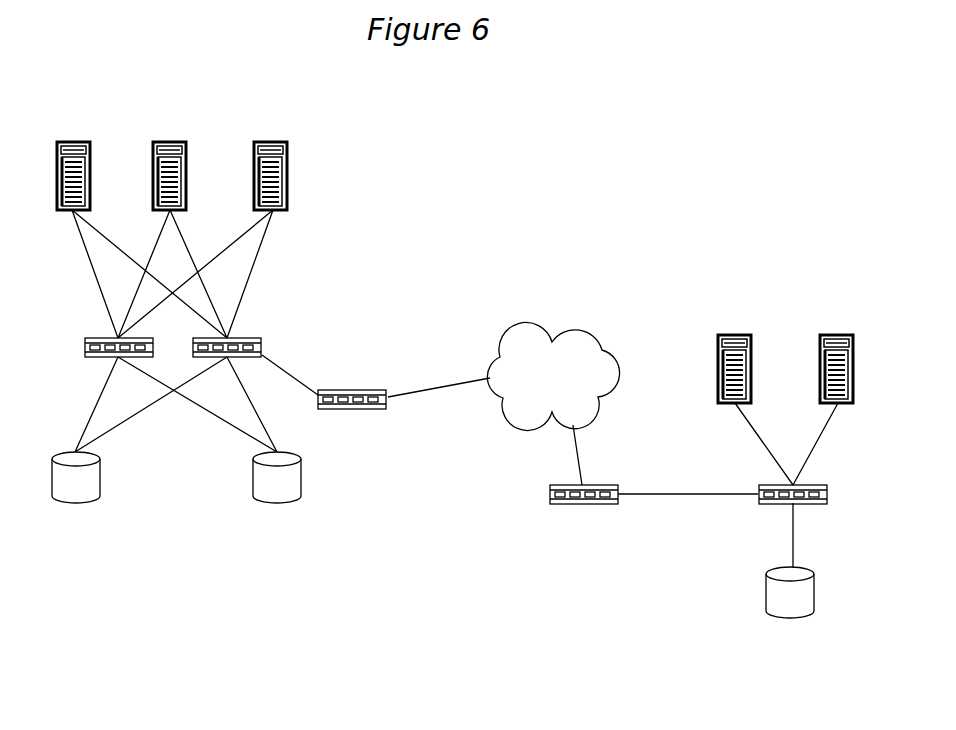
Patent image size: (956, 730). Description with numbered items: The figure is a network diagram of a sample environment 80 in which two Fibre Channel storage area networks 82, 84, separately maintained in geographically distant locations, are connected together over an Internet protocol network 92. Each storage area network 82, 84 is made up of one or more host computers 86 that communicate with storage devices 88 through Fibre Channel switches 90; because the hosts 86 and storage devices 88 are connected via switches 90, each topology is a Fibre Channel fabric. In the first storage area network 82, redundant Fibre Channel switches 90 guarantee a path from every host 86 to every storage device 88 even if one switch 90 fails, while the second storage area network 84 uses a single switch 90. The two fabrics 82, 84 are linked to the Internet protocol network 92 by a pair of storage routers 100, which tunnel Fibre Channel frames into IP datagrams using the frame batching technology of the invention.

The sample environment 80 is at (501, 168).
The storage area network 82 is at (336, 269).
The storage area network 84 is at (713, 545).
The host computer 86 is at (272, 142).
The storage device 88 is at (277, 503).
The Fibre Channel switch 90 is at (105, 338).
The Internet protocol network 92 is at (576, 323).
The storage router 100 is at (340, 390).